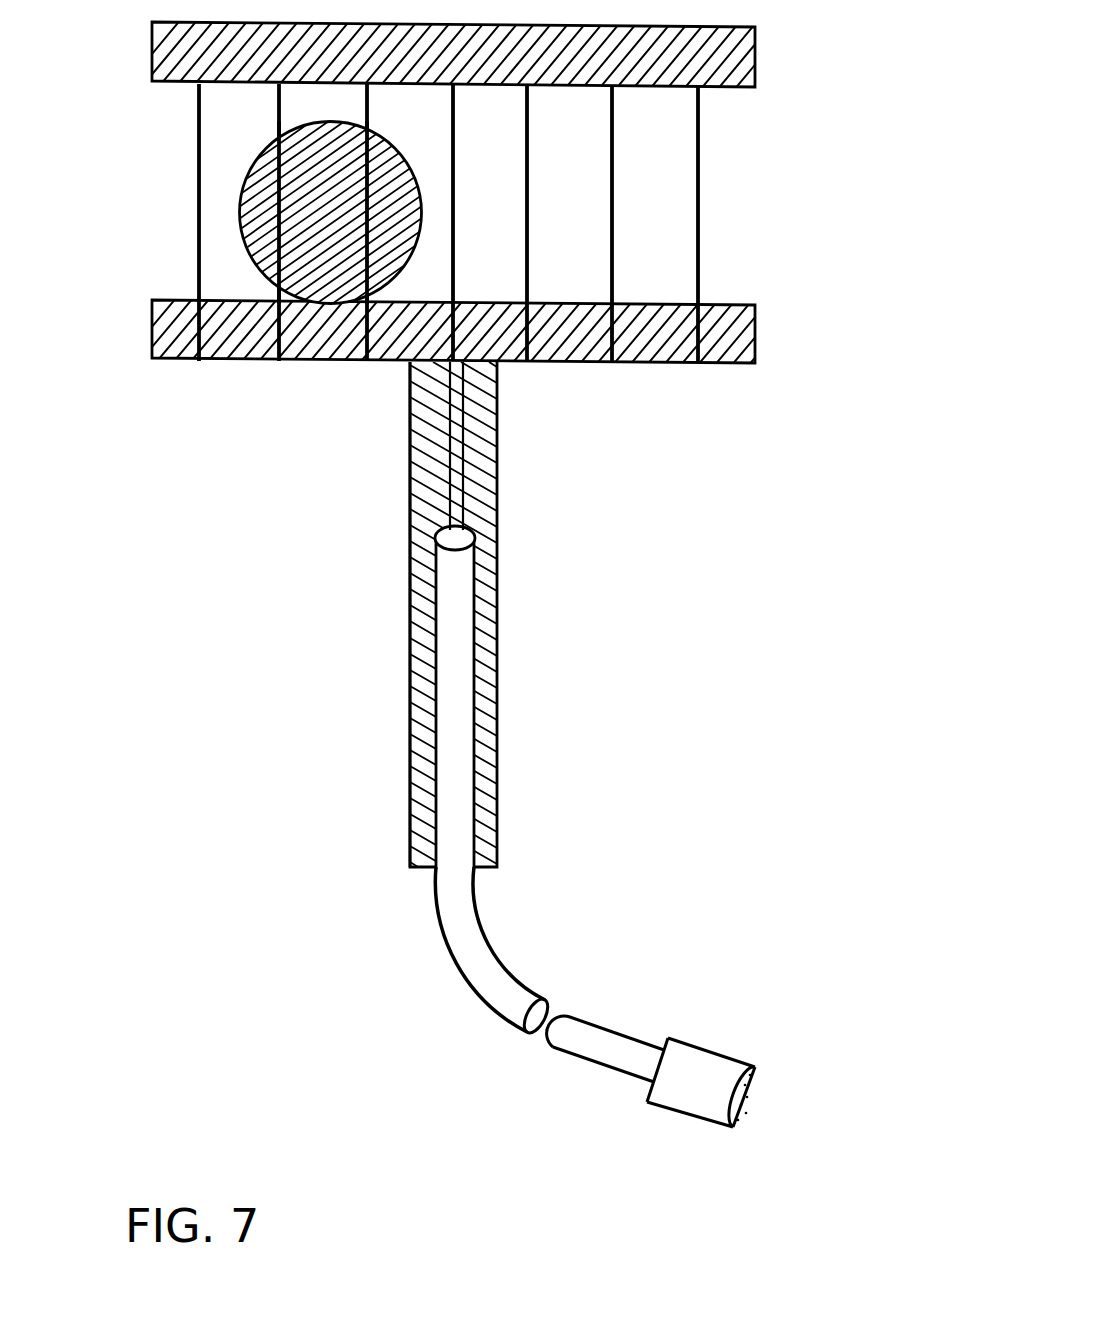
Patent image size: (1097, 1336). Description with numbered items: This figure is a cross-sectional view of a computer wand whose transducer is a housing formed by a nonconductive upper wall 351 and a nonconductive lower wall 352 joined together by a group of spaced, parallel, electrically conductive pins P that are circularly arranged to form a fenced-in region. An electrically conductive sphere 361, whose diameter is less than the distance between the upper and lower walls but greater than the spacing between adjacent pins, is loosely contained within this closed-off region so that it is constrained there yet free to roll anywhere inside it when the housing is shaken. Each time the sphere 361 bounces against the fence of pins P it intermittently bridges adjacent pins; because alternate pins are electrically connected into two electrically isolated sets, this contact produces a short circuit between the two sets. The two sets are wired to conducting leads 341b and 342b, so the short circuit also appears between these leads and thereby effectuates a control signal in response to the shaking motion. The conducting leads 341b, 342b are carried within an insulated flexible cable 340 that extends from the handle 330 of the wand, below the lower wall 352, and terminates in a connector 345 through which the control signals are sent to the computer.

The nonconductive upper wall 351 is at (733, 55).
The nonconductive lower wall 352 is at (733, 338).
The electrically conductive pins P is at (617, 228).
The electrically conductive sphere 361 is at (315, 215).
The handle 330 is at (461, 614).
The conducting lead 341b is at (463, 483).
The conducting lead 342b is at (428, 482).
The insulated flexible cable 340 is at (480, 947).
The connector 345 is at (683, 1055).